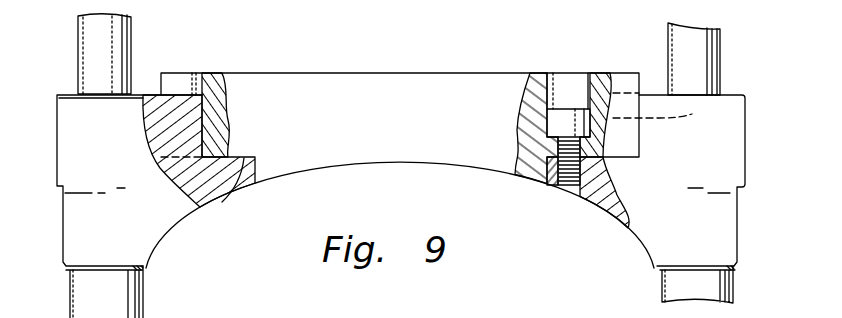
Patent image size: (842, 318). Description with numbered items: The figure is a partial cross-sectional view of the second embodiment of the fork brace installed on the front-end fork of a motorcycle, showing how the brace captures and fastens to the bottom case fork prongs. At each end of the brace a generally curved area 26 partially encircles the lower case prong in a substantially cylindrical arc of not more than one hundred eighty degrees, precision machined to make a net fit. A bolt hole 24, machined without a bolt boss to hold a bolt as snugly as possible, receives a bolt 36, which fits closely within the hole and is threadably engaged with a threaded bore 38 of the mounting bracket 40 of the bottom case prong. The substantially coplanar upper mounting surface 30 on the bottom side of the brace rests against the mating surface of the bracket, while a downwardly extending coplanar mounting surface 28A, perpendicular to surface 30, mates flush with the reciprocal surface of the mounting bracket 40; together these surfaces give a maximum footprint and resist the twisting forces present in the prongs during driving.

The bolt hole 24 is at (558, 73).
The curved area 26 is at (198, 116).
The downwardly extending coplanar mounting surface 28A is at (547, 175).
The upper mounting surface 30 is at (200, 206).
The bolt 36 is at (577, 107).
The threaded bore 38 is at (567, 201).
The mounting bracket 40 is at (629, 229).